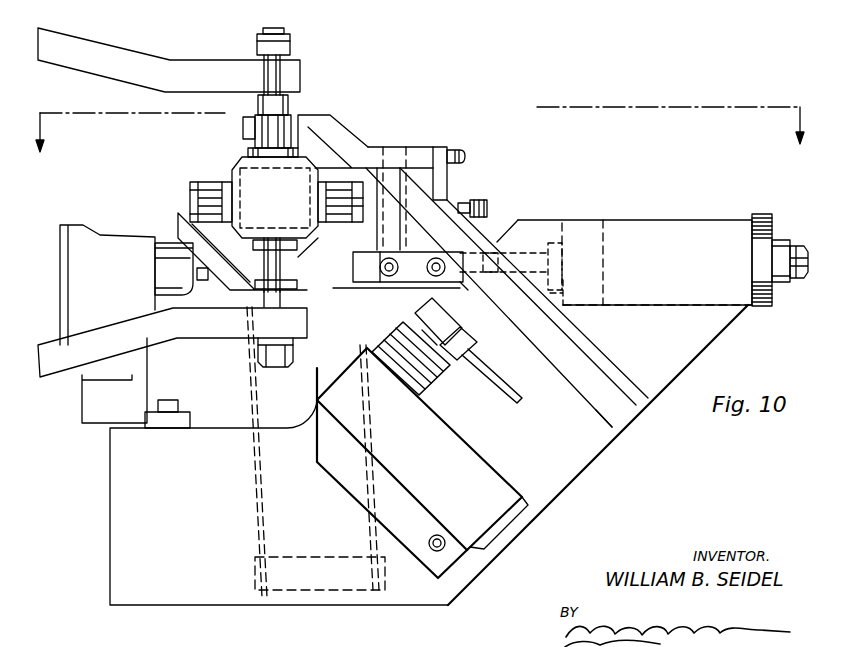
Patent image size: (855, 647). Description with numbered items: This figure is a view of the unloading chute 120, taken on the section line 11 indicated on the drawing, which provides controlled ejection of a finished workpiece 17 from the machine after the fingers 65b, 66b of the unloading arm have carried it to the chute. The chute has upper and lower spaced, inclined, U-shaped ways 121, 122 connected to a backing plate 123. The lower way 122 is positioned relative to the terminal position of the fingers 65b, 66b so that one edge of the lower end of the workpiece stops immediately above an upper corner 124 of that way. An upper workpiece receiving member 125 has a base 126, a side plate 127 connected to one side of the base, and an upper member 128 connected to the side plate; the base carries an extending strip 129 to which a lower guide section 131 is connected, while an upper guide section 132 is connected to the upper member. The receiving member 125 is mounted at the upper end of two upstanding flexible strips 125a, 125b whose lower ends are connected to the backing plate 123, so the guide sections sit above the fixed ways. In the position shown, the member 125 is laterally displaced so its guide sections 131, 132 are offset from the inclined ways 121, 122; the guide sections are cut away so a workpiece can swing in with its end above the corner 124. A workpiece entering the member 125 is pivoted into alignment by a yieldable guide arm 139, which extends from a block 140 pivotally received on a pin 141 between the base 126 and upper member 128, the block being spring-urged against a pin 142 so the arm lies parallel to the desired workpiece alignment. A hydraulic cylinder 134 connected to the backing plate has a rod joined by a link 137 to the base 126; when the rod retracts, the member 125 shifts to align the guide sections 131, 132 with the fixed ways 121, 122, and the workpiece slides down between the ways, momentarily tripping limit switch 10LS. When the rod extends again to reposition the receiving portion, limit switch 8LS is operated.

The section line 11— 11 is at (417, 143).
The finger of the unloading arm 65b is at (133, 51).
The finger of the unloading arm 66b is at (62, 365).
The workpiece 17 is at (280, 204).
The yieldable guide arm 139 is at (235, 160).
The extending strip 129 is at (178, 213).
The lower guide section 131 is at (178, 233).
The block 140 is at (322, 247).
The limit switch 8LS is at (112, 303).
The upper guide section 132 is at (331, 116).
The upper member 128 is at (412, 146).
The pin 141 is at (392, 130).
The base 126 is at (447, 176).
The side plate 127 is at (448, 147).
The pin 142 is at (487, 208).
The upper workpiece receiving member 125 is at (362, 124).
The unloading chute 120 is at (566, 184).
The hydraulic cylinder 134 is at (655, 308).
The upper corner of the lower way 124 is at (305, 271).
The link 137 is at (432, 293).
The limit switch 10LS is at (458, 498).
The upstanding flexible strip 125a is at (257, 466).
The upstanding flexible strip 125b is at (362, 520).
The backing plate 123 is at (374, 606).
The lower way 122 is at (561, 492).
The upper way 121 is at (610, 425).